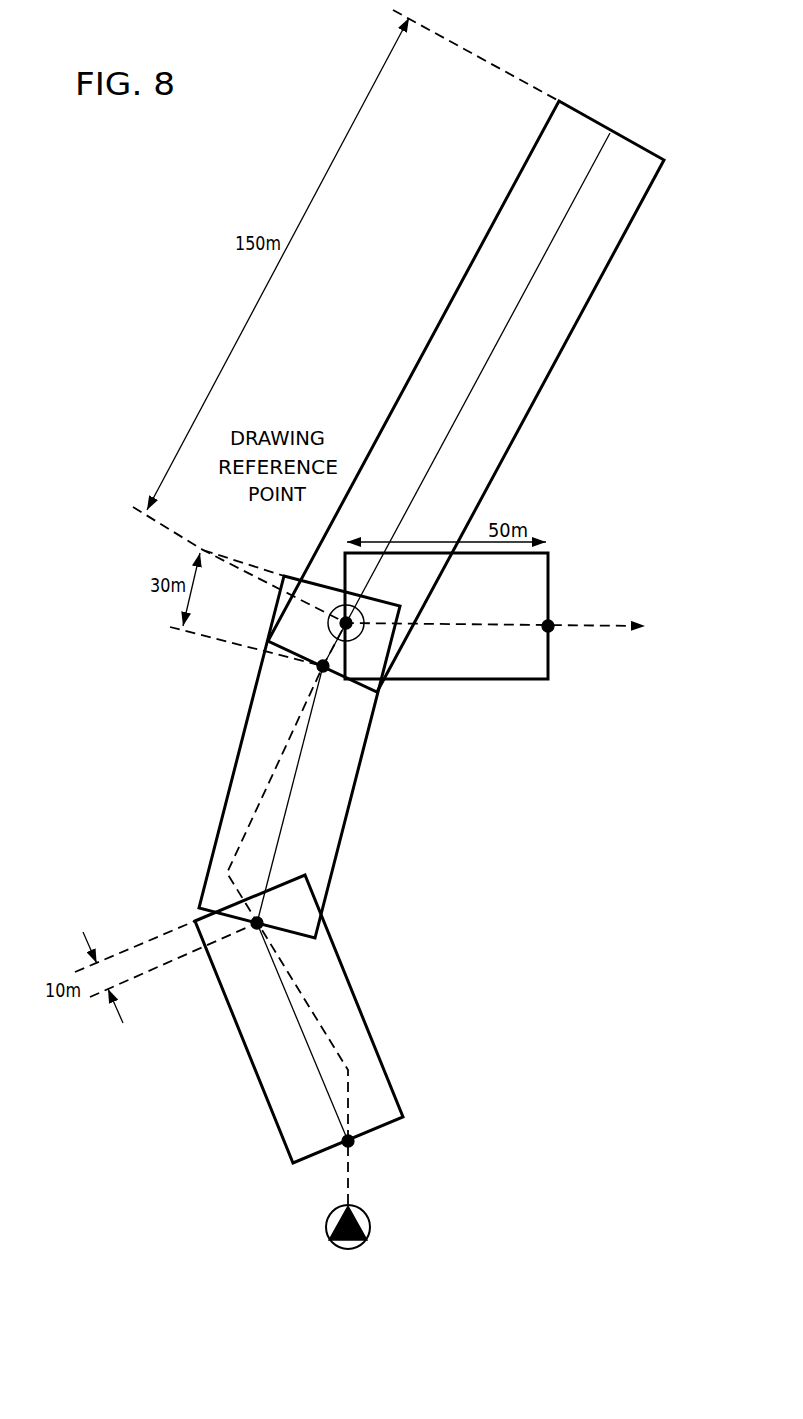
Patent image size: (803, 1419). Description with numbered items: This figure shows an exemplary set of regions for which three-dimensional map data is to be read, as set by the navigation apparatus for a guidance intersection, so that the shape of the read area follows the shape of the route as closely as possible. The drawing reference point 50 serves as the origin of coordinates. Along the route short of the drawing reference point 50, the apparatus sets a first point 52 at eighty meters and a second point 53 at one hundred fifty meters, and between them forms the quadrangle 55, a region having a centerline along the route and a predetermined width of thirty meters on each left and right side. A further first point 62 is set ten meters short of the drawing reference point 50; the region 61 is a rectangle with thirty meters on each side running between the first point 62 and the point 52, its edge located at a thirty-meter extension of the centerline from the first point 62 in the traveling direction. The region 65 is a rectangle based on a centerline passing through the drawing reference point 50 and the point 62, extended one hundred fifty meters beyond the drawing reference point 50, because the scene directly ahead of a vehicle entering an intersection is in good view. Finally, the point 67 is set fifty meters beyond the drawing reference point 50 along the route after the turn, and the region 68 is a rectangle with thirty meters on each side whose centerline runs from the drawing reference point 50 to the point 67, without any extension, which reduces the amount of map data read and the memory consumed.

The drawing reference point 50 is at (341, 617).
The first point 52 is at (257, 925).
The second point 53 is at (346, 1144).
The quadrangle 55 is at (368, 1021).
The region for which data is to be read 61 is at (356, 799).
The first point 62 is at (321, 668).
The region for which data is to be read 65 is at (594, 300).
The point 67 is at (550, 622).
The region for which data is to be read 68 is at (484, 682).